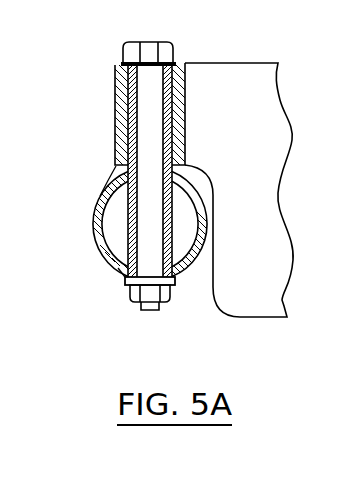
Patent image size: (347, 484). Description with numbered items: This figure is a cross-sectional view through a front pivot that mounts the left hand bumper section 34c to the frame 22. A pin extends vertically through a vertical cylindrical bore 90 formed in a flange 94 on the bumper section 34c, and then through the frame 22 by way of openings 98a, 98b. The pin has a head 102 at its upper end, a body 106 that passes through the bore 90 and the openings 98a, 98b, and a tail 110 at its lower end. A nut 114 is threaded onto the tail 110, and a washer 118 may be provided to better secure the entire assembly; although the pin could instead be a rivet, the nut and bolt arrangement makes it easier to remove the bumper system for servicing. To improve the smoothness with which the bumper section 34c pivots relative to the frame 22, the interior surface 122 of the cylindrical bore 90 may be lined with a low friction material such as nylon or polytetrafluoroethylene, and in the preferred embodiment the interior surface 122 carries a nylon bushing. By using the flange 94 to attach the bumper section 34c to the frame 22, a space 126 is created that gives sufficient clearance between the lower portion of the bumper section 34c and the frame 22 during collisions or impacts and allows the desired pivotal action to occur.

The frame 22 is at (95, 245).
The left hand bumper section 34c is at (268, 203).
The vertical cylindrical bore 90 is at (183, 57).
The flange 94 is at (190, 93).
The opening 98a is at (125, 168).
The opening 98b is at (125, 285).
The head 102 is at (150, 40).
The body 106 is at (155, 148).
The tail 110 is at (156, 311).
The nut 114 is at (127, 298).
The washer 118 is at (187, 283).
The interior surface 122 is at (123, 87).
The space 126 is at (213, 243).